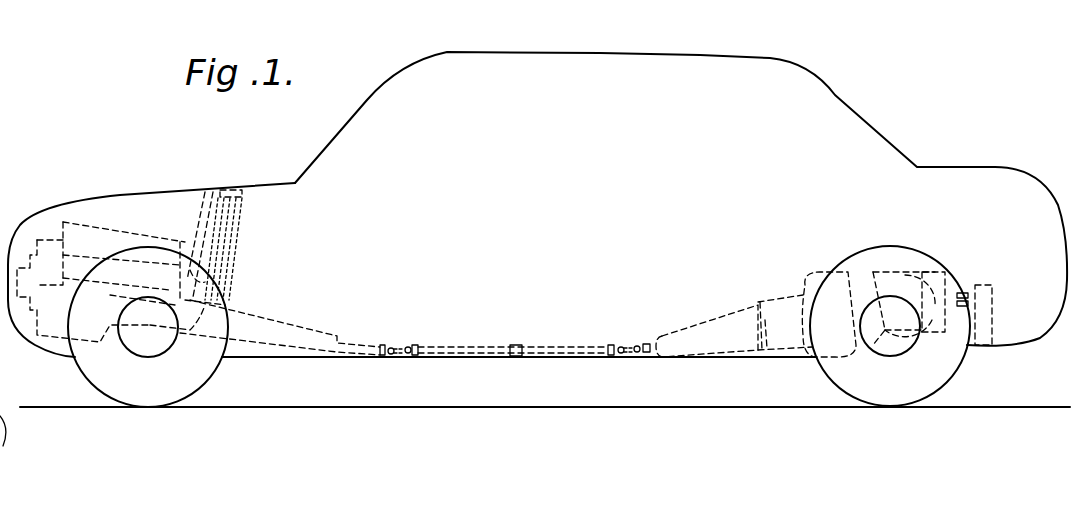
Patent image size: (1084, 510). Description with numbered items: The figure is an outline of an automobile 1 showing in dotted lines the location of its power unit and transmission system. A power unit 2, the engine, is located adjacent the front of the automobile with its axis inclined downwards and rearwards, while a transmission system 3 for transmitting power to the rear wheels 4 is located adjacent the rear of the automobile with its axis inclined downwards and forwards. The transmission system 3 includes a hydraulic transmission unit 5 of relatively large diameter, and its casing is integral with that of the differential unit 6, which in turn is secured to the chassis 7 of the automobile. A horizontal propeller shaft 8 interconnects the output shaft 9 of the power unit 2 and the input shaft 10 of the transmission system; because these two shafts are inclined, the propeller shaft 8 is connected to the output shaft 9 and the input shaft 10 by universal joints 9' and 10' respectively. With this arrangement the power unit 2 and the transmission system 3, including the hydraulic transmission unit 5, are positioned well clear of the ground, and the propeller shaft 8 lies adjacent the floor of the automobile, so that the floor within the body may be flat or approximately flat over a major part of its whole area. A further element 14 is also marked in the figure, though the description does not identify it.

The automobile 1 is at (612, 52).
The power unit 2 is at (105, 238).
The transmission system 3 is at (758, 303).
The rear wheels 4 is at (933, 370).
The hydraulic transmission unit 5 is at (810, 277).
The differential unit 6 is at (897, 275).
The chassis 7 is at (985, 300).
The propeller shaft 8 is at (455, 348).
The output shaft 9 is at (381, 329).
The universal joint 9' is at (420, 368).
The input shaft 10 is at (621, 337).
The universal joint 10' is at (627, 367).
The shaft support 14 is at (787, 330).